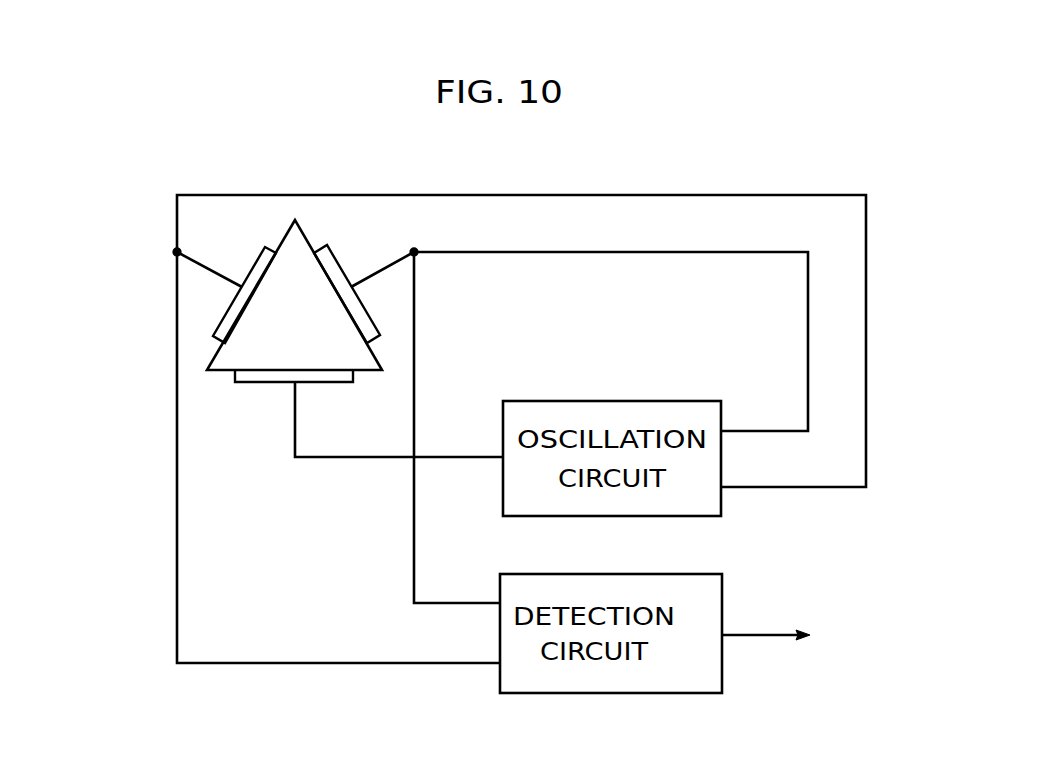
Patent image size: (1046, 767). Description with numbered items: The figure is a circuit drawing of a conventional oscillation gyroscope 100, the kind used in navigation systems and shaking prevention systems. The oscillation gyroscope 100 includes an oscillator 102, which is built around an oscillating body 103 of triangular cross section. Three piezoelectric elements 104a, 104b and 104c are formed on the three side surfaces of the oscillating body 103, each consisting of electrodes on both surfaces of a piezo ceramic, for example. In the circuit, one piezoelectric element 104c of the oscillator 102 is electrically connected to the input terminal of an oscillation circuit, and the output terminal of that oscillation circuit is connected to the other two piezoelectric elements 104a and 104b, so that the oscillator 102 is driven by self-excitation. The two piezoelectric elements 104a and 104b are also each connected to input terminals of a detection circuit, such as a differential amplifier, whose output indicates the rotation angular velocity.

The oscillation gyroscope 100 is at (737, 175).
The oscillator 102 is at (256, 249).
The oscillating body 103 is at (364, 360).
The piezoelectric element 104a is at (340, 282).
The piezoelectric element 104b is at (227, 316).
The piezoelectric element 104c is at (260, 377).